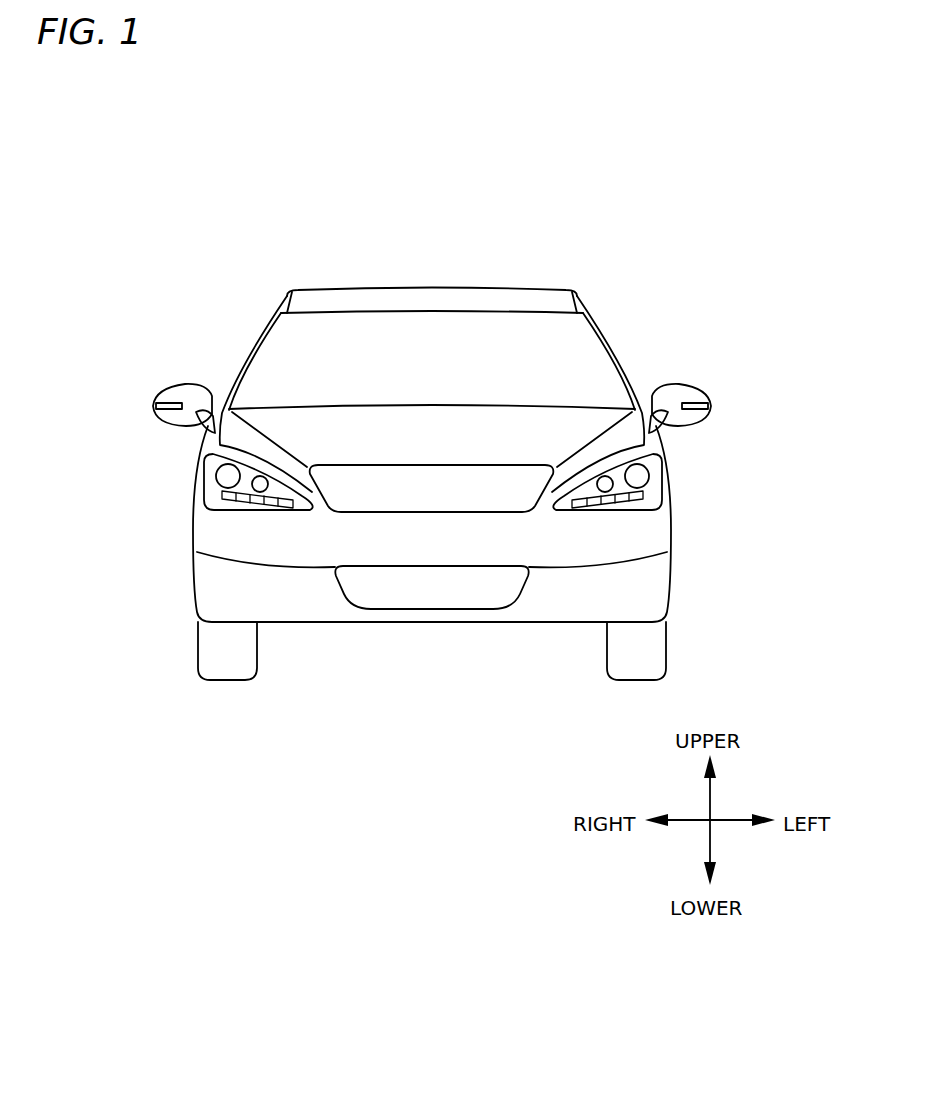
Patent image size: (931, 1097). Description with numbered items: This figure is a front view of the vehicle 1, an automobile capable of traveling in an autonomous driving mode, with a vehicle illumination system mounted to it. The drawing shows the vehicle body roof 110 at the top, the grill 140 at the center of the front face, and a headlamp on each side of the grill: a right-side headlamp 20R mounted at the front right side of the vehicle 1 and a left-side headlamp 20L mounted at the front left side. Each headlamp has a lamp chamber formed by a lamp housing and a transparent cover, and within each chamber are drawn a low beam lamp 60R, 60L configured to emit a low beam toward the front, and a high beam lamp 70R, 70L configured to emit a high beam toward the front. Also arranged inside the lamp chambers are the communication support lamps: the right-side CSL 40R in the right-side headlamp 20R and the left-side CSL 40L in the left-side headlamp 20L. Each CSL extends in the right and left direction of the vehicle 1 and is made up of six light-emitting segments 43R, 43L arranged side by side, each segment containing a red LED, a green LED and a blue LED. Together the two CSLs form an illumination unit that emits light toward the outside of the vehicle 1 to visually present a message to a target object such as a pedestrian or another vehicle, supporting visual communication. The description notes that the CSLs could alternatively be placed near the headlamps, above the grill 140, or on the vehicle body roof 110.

The vehicle 1 is at (238, 265).
The vehicle body roof 110 is at (511, 290).
The grill 140 is at (421, 470).
The right-side headlamp 20R is at (212, 486).
The left-side headlamp 20L is at (652, 487).
The low beam lamp 60R is at (224, 470).
The low beam lamp 60L is at (641, 470).
The high beam lamp 70R is at (263, 476).
The high beam lamp 70L is at (604, 476).
The right-side communication support lamp 40R is at (263, 510).
The left-side communication support lamp 40L is at (600, 509).
The light-emitting segments 43R is at (297, 507).
The light-emitting segments 43L is at (577, 508).